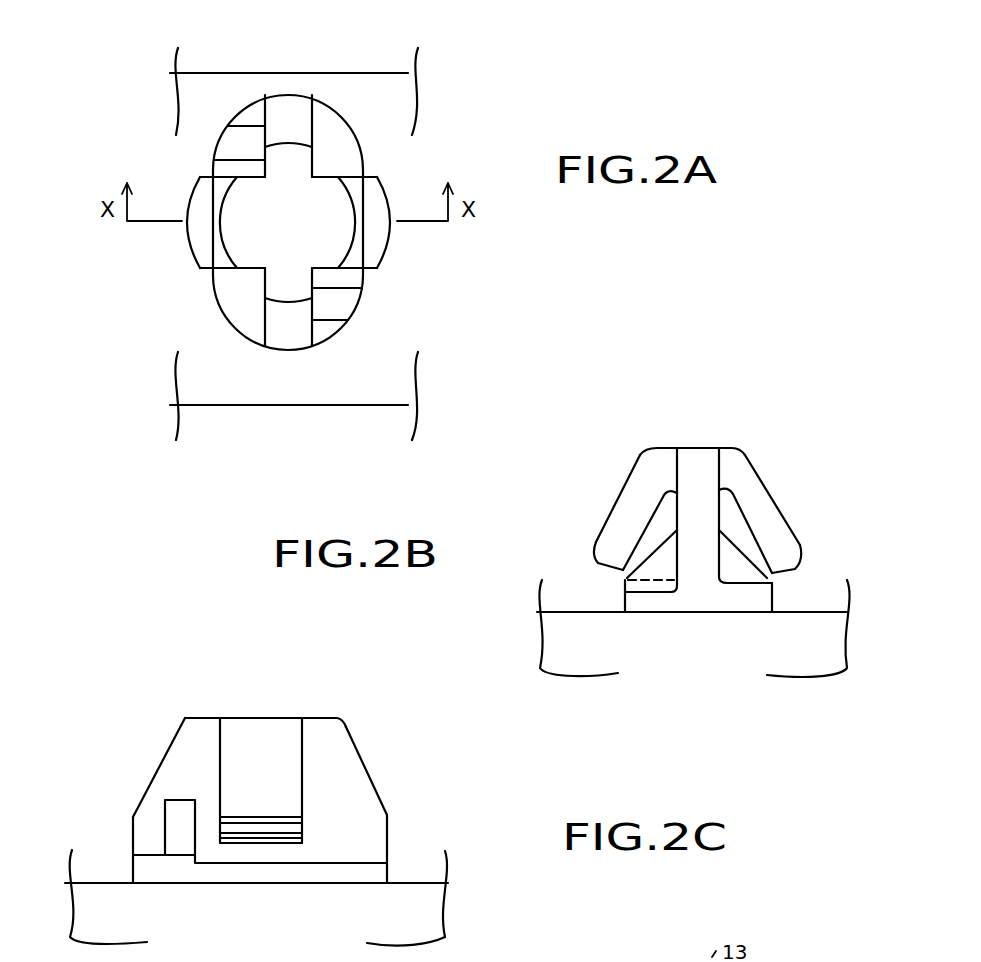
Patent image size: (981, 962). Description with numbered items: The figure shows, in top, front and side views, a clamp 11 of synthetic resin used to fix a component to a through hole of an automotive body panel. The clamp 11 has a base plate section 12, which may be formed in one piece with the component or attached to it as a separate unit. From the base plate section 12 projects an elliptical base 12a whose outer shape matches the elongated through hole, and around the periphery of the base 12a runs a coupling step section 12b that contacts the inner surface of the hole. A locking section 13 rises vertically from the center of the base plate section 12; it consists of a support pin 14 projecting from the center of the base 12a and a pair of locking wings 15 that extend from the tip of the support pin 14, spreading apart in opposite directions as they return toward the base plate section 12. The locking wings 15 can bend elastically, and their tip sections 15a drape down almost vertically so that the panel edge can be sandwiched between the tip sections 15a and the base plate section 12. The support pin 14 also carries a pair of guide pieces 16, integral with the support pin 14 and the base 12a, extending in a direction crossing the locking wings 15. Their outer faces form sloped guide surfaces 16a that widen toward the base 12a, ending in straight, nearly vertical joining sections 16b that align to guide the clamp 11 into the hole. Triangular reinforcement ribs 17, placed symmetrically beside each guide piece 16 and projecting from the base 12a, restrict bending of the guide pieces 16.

In FIG. 2C, the clamp 11 is at (751, 424).
In FIG. 2A, the base plate section 12 is at (372, 378).
In FIG. 2B, the base plate section 12 is at (408, 872).
In FIG. 2C, the base plate section 12 is at (817, 610).
In FIG. 2B, the base 12a is at (228, 873).
In FIG. 2C, the base 12a is at (707, 595).
In FIG. 2C, the coupling step section 12b is at (622, 604).
In FIG. 2C, the locking section 13 is at (763, 455).
In FIG. 2C, the support pin 14 is at (693, 512).
In FIG. 2A, the locking wings 15 is at (205, 210).
In FIG. 2B, the locking wings 15 is at (283, 780).
In FIG. 2C, the locking wings 15 is at (600, 537).
In FIG. 2B, the tip sections 15a is at (280, 840).
In FIG. 2C, the tip sections 15a is at (800, 572).
In FIG. 2B, the guide pieces 16 is at (182, 752).
In FIG. 2A, the sloped guide surfaces 16a is at (284, 128).
In FIG. 2B, the sloped guide surfaces 16a is at (162, 770).
In FIG. 2B, the joining sections 16b is at (388, 855).
In FIG. 2A, the triangular reinforcement ribs 17 is at (243, 147).
In FIG. 2B, the triangular reinforcement ribs 17 is at (177, 832).
In FIG. 2C, the triangular reinforcement ribs 17 is at (655, 572).